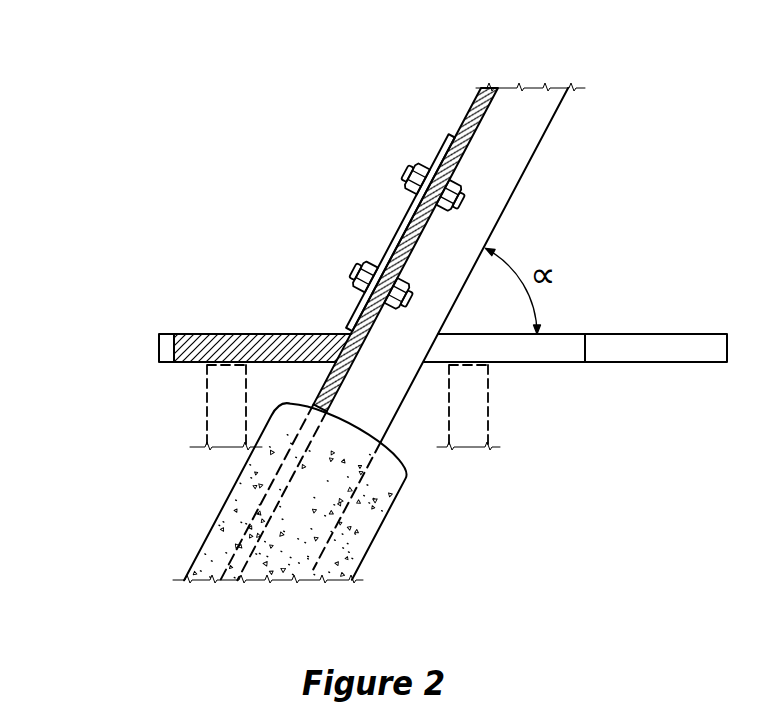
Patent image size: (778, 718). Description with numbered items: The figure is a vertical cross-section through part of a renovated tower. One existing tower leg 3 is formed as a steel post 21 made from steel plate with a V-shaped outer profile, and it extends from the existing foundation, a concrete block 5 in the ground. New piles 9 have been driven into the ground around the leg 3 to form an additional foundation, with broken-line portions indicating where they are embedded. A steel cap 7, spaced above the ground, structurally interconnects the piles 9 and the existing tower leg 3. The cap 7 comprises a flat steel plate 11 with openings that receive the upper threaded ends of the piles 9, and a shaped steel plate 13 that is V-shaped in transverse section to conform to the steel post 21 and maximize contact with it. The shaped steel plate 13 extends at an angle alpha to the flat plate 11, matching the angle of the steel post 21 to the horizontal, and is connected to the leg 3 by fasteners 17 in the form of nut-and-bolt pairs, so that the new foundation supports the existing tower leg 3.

The existing tower leg 3 is at (464, 117).
The concrete block 5 is at (222, 513).
The steel cap 7 is at (321, 232).
The pile 9 is at (207, 393).
The flat steel plate 11 is at (258, 333).
The shaped steel plate 13 is at (390, 229).
The nut 17 is at (407, 181).
The steel post 21 is at (526, 171).